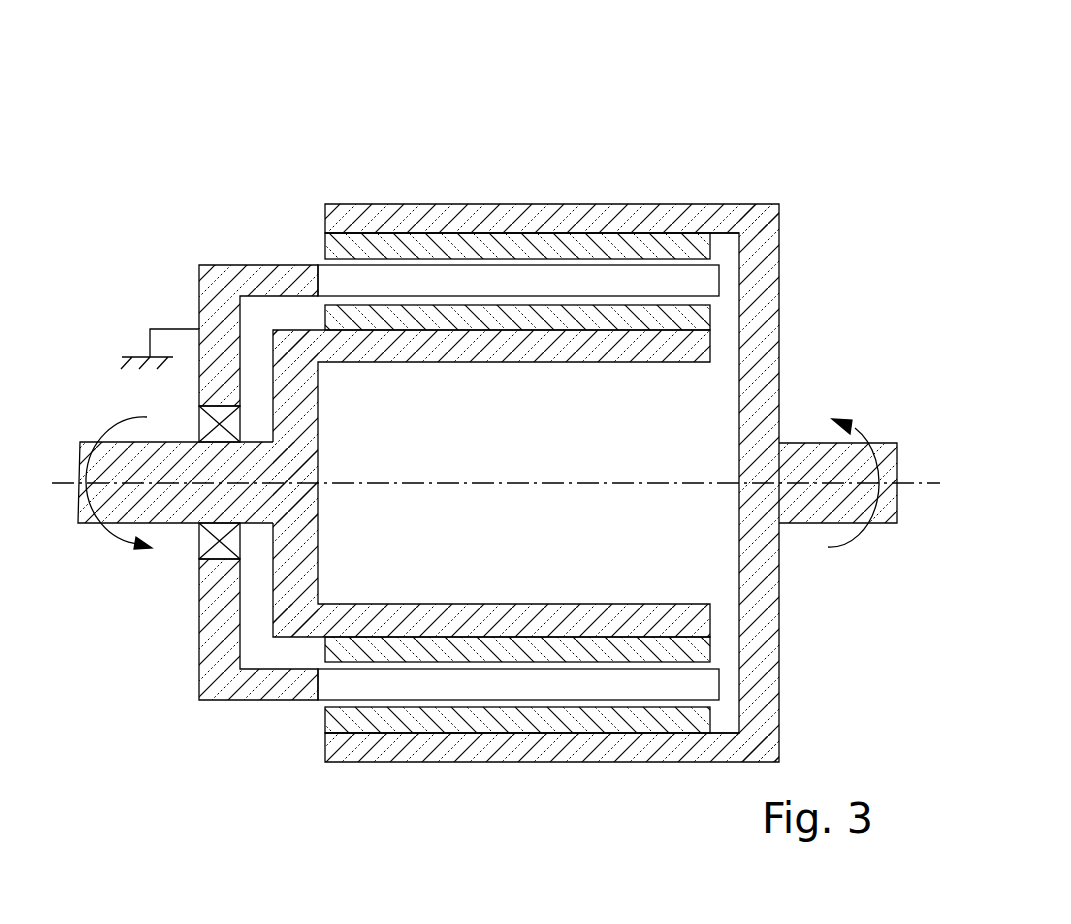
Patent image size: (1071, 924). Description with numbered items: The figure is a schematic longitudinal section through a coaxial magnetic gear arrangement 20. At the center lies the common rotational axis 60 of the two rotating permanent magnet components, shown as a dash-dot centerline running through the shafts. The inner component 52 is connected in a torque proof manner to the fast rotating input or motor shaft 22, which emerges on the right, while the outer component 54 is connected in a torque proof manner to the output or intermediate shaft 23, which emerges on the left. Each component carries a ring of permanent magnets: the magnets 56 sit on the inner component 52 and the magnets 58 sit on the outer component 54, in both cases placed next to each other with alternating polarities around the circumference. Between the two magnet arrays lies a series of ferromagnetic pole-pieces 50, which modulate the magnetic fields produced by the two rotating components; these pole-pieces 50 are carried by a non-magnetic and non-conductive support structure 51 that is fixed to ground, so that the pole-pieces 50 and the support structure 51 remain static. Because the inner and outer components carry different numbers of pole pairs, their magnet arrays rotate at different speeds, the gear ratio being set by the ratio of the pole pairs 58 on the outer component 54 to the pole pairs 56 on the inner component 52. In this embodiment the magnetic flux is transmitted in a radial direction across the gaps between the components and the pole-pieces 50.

The coaxial magnetic gear arrangement 20 is at (803, 152).
The input or motor shaft 22 is at (803, 460).
The output or intermediate shaft 23 is at (163, 508).
The pole-pieces 50 is at (348, 278).
The support structure 51 is at (249, 272).
The inner component 52 is at (511, 350).
The outer component 54 is at (554, 216).
The permanent magnets of the inner component 56 is at (585, 318).
The permanent magnets of the outer component 58 is at (611, 243).
The common rotational axis 60 is at (63, 481).